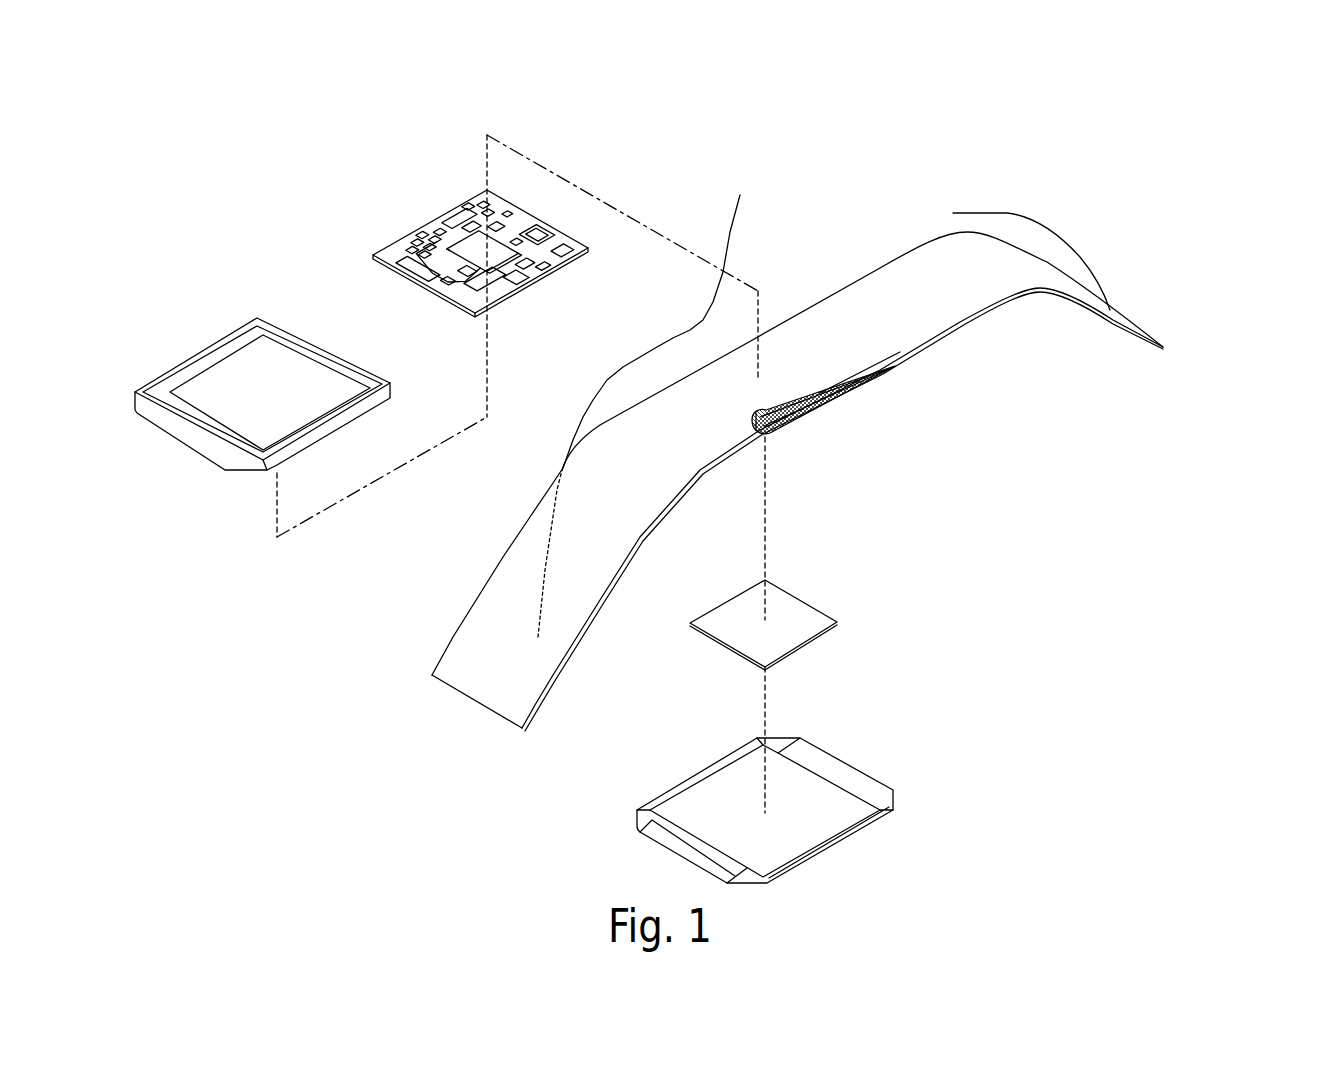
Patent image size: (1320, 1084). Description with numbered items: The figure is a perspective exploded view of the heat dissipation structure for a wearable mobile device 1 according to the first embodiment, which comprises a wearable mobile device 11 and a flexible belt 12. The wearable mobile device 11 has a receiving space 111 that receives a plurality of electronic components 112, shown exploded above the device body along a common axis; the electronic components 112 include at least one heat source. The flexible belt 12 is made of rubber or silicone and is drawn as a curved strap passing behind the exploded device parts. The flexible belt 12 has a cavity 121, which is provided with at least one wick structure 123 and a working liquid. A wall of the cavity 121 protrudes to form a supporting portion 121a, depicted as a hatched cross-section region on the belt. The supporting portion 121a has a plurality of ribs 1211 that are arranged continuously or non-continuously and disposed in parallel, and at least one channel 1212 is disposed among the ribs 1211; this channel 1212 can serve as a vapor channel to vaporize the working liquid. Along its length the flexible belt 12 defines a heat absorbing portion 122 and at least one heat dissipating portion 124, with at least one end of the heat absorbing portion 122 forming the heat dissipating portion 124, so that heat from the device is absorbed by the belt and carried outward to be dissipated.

The heat dissipation structure for a wearable mobile device 1 is at (1200, 224).
The wearable mobile device 11 is at (764, 776).
The receiving space 111 is at (668, 775).
The electronic components 112 is at (313, 347).
The flexible belt 12 is at (927, 152).
The cavity 121 is at (838, 456).
The ribs 1211 is at (811, 412).
The channel 1212 is at (780, 428).
The supporting portion 121a is at (933, 523).
The heat absorbing portion 122 is at (803, 347).
The wick structure 123 is at (822, 391).
The heat dissipating portion 124 is at (953, 213).